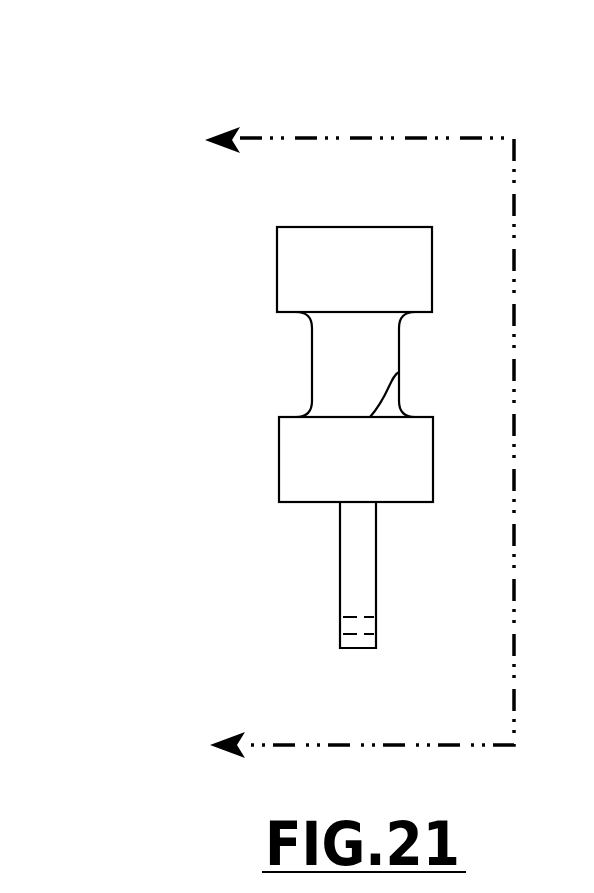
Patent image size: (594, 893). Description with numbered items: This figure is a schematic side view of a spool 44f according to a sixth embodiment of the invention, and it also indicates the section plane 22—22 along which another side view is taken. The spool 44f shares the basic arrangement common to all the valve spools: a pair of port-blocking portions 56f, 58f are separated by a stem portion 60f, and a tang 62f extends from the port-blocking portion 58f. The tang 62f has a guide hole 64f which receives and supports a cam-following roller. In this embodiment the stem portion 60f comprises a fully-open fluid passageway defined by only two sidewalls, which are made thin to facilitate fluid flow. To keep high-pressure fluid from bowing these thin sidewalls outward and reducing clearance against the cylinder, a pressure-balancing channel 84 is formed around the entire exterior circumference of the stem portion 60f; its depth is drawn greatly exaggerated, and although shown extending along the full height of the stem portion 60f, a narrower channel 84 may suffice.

The plane 22— 22 is at (341, 439).
The spool 44f is at (251, 275).
The port-blocking portion 56f is at (404, 250).
The port-blocking portion 58f is at (307, 462).
The stem portion 60f is at (330, 352).
The tang 62f is at (358, 543).
The guide hole 64f is at (380, 619).
The pressure-balancing channel 84 is at (398, 377).